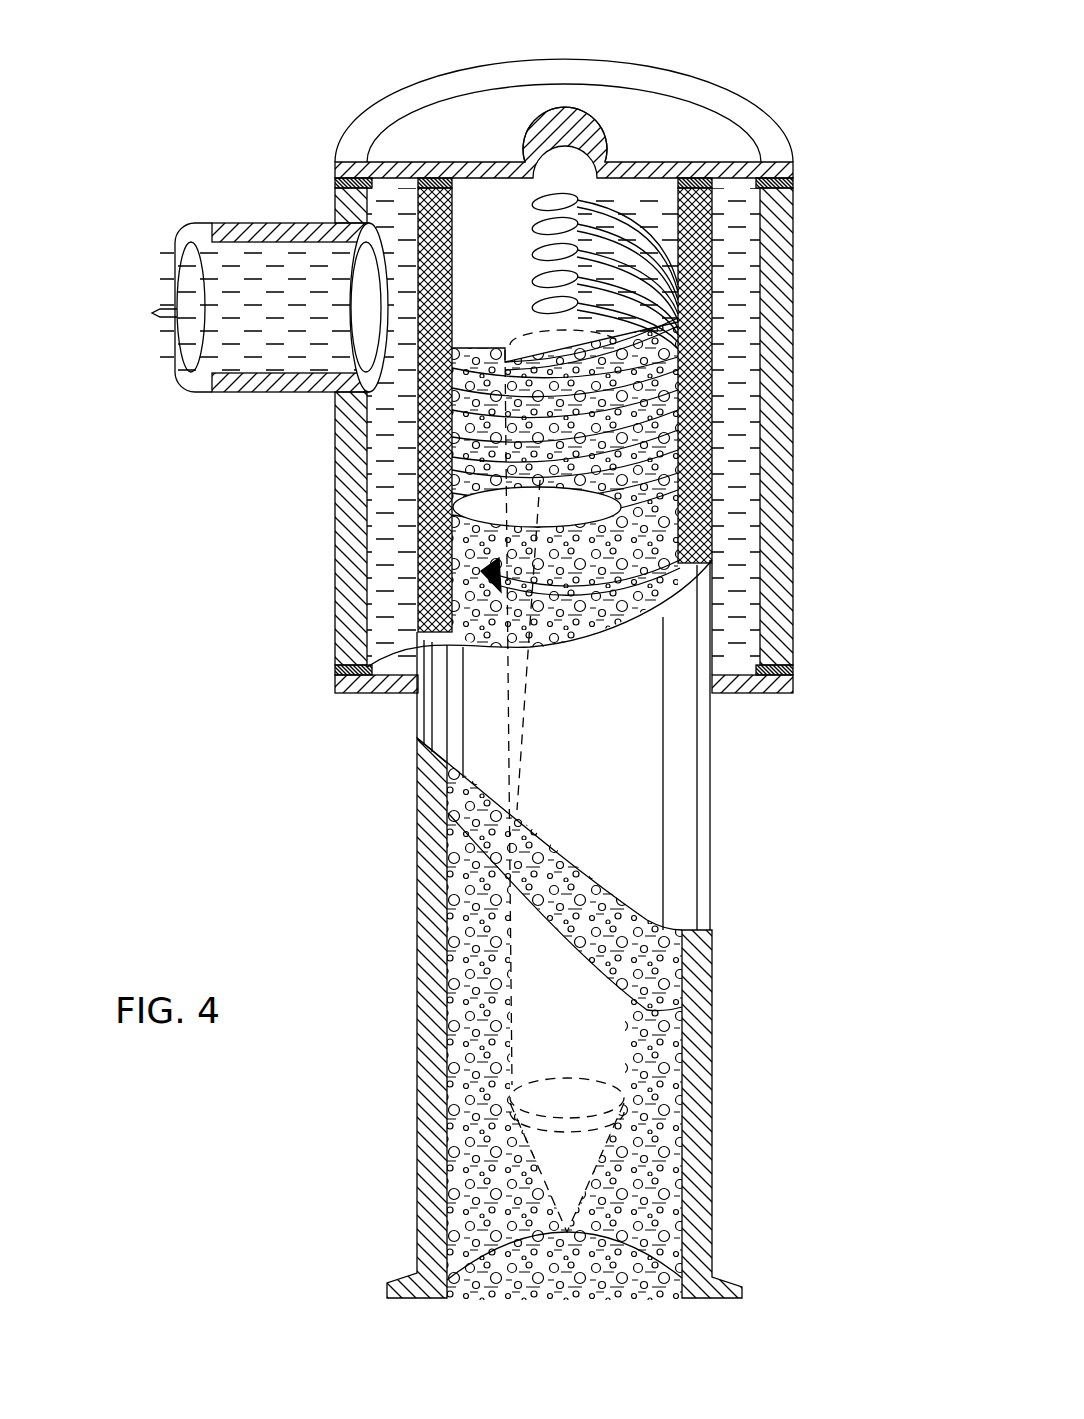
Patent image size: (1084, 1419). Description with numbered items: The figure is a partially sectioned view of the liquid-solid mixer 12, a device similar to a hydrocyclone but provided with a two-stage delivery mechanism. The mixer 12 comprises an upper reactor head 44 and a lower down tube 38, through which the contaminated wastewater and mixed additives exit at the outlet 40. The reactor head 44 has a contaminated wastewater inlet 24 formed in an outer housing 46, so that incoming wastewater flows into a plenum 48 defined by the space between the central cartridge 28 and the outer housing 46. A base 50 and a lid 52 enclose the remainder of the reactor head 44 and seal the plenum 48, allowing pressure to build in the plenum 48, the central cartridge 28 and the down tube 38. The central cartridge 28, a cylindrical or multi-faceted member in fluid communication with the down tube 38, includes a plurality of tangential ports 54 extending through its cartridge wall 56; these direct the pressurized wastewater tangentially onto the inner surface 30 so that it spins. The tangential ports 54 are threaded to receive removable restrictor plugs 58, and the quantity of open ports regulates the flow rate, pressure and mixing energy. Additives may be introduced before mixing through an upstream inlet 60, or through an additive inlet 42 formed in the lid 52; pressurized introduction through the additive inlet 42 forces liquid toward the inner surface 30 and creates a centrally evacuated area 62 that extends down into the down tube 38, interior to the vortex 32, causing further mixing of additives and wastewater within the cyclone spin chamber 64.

The liquid-solid mixer 12 is at (846, 269).
The contaminated wastewater inlet 24 is at (205, 270).
The central cartridge 28 is at (483, 200).
The inner surface 30 is at (506, 285).
The vortex 32 is at (647, 553).
The down tube 38 is at (739, 1034).
The outlet 40 is at (598, 1270).
The additive inlet 42 is at (607, 147).
The reactor head 44 is at (243, 125).
The outer housing 46 is at (338, 442).
The plenum 48 is at (380, 498).
The base 50 is at (372, 689).
The lid 52 is at (393, 107).
The tangential ports 54 is at (562, 262).
The cartridge wall 56 is at (423, 203).
The removable restrictor plugs 58 is at (713, 283).
The upstream inlet 60 is at (162, 321).
The centrally evacuated area 62 is at (557, 1020).
The cyclone spin chamber 64 is at (678, 848).